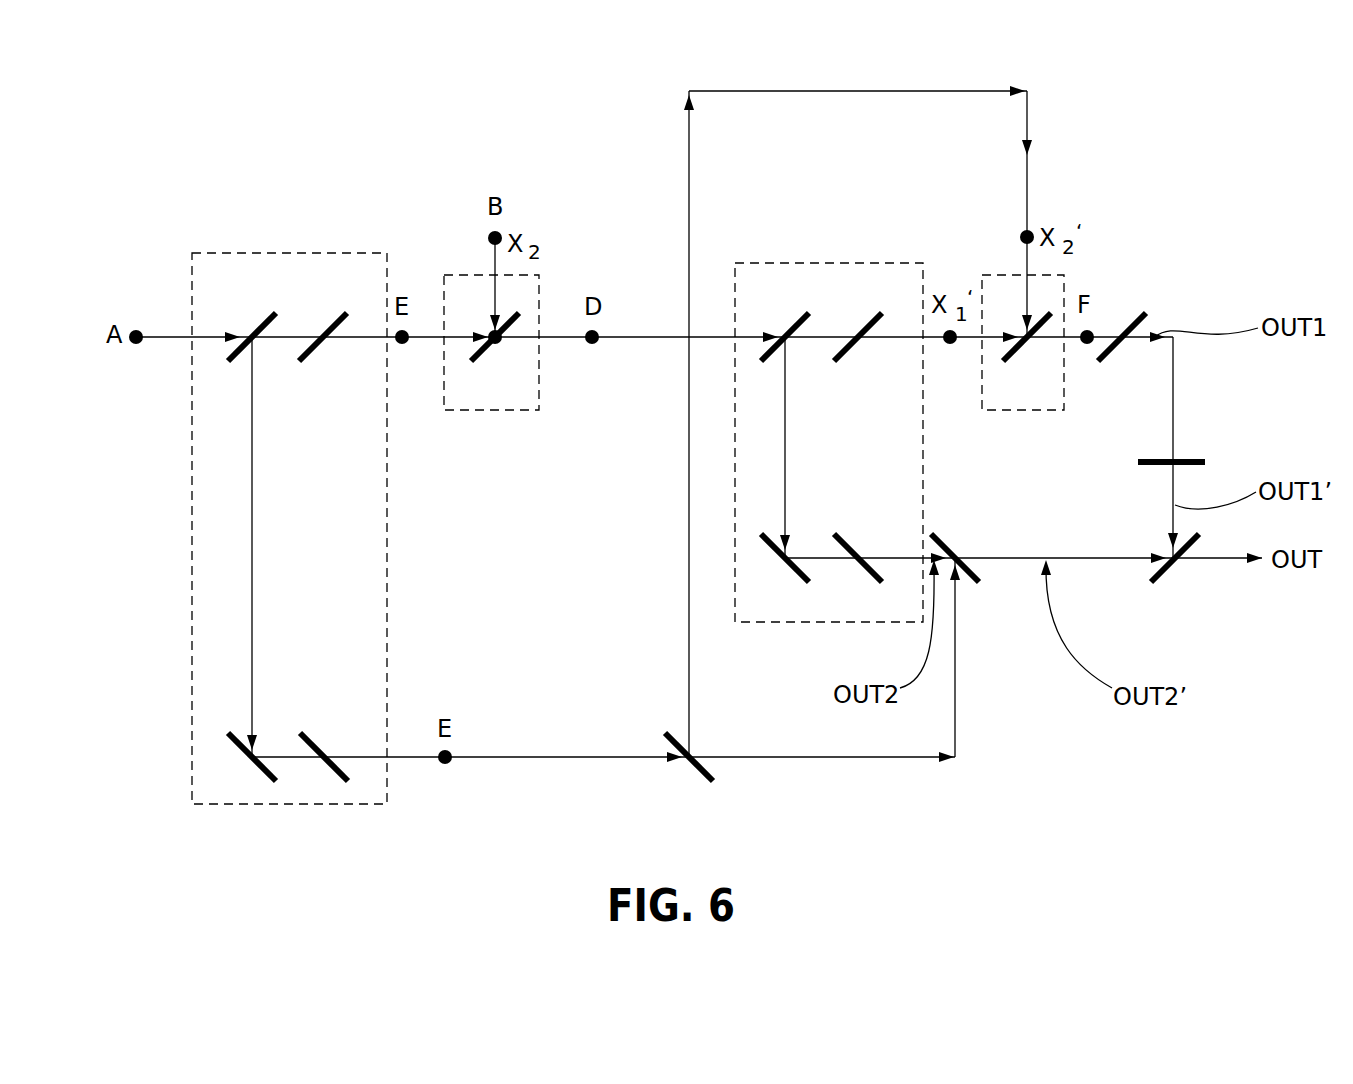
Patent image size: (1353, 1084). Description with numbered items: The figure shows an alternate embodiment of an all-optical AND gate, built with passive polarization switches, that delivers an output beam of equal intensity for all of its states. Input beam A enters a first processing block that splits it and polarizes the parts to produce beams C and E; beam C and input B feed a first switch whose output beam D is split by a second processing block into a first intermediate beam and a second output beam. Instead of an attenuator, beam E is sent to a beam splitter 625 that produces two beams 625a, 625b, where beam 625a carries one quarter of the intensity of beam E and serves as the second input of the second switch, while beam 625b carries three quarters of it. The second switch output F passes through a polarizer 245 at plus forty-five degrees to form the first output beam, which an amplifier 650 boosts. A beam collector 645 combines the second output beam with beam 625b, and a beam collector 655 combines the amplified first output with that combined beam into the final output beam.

The polarizer 245 is at (1130, 306).
The amplifier 650 is at (1196, 447).
The beam collector 655 is at (1171, 580).
The beam collector 645 is at (963, 582).
The beam splitter 625 is at (688, 777).
The beam 625a is at (688, 672).
The beam 625b is at (827, 760).